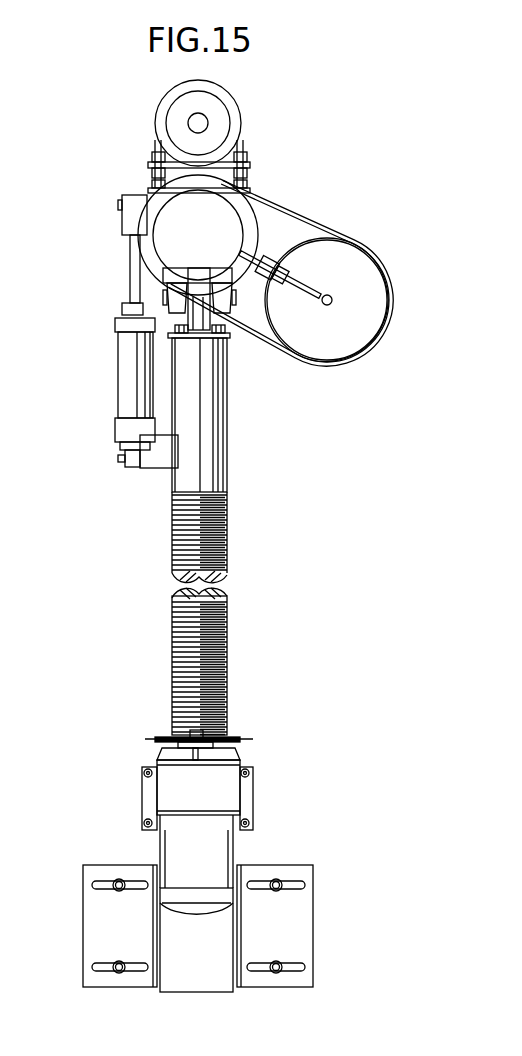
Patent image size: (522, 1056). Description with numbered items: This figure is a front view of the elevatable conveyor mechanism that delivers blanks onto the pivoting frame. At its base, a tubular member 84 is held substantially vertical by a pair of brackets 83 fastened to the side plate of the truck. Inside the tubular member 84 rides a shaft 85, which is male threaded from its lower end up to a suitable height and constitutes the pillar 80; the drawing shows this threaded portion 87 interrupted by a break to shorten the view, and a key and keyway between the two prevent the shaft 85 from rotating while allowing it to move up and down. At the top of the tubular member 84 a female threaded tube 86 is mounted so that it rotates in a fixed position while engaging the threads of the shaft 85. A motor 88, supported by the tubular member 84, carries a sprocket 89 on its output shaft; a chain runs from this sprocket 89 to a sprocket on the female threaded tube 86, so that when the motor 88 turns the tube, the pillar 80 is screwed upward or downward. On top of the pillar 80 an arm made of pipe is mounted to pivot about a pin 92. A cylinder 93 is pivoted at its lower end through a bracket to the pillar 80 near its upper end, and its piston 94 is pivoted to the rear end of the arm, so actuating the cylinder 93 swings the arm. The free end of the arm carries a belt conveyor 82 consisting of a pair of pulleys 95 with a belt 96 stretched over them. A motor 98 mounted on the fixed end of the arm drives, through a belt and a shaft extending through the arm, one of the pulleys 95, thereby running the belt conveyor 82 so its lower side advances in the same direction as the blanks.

The pillar 80 is at (228, 432).
The belt conveyor 82 is at (388, 322).
The brackets 83 is at (100, 913).
The tubular member 84 is at (215, 977).
The shaft 85 is at (210, 478).
The female threaded tube 86 is at (170, 745).
The threaded shaft 87 is at (183, 605).
The motor 88 is at (228, 792).
The sprocket 89 is at (163, 738).
The pin 92 is at (118, 320).
The cylinder 93 is at (125, 395).
The piston 94 is at (130, 272).
The pulleys 95 is at (375, 272).
The belt 96 is at (320, 222).
The motor 98 is at (240, 129).